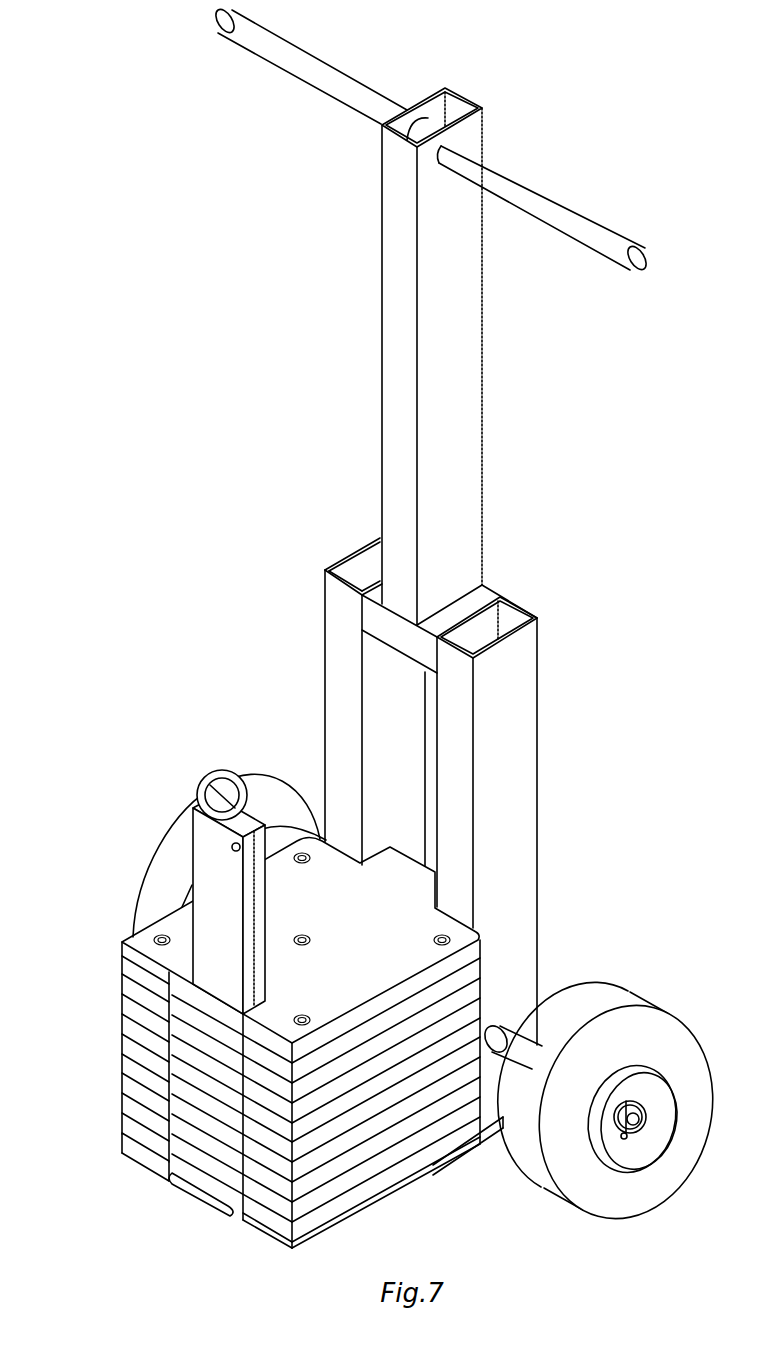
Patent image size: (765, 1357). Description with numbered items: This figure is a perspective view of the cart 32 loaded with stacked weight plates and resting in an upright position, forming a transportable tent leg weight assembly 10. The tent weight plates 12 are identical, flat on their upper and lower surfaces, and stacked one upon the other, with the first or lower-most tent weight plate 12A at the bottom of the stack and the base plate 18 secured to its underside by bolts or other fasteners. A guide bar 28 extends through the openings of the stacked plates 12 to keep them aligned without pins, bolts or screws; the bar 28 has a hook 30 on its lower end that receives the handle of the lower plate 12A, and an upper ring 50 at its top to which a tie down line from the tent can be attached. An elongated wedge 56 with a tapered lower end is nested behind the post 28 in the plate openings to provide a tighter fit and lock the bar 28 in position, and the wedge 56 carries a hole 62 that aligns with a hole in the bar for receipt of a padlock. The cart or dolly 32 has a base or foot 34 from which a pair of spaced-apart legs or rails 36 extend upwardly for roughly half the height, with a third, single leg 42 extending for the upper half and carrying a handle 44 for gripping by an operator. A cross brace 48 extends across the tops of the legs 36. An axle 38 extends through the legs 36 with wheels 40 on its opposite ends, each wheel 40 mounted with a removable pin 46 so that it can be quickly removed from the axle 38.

The tent leg weight assembly 10 is at (72, 913).
The tent weight plates 12 is at (122, 962).
The lower-most tent weight plate 12A is at (122, 1140).
The base plate 18 is at (265, 1238).
The guide bar 28 is at (205, 868).
The hook 30 is at (187, 1188).
The cart 32 is at (163, 666).
The foot 34 is at (453, 1163).
The legs 36 is at (333, 742).
The axle 38 is at (513, 1040).
The wheels 40 is at (155, 893).
The single leg 42 is at (473, 441).
The handle 44 is at (557, 205).
The removable pin 46 is at (645, 1108).
The cross brace 48 is at (378, 620).
The upper ring 50 is at (208, 774).
The wedge 56 is at (260, 886).
The hole 62 is at (232, 846).